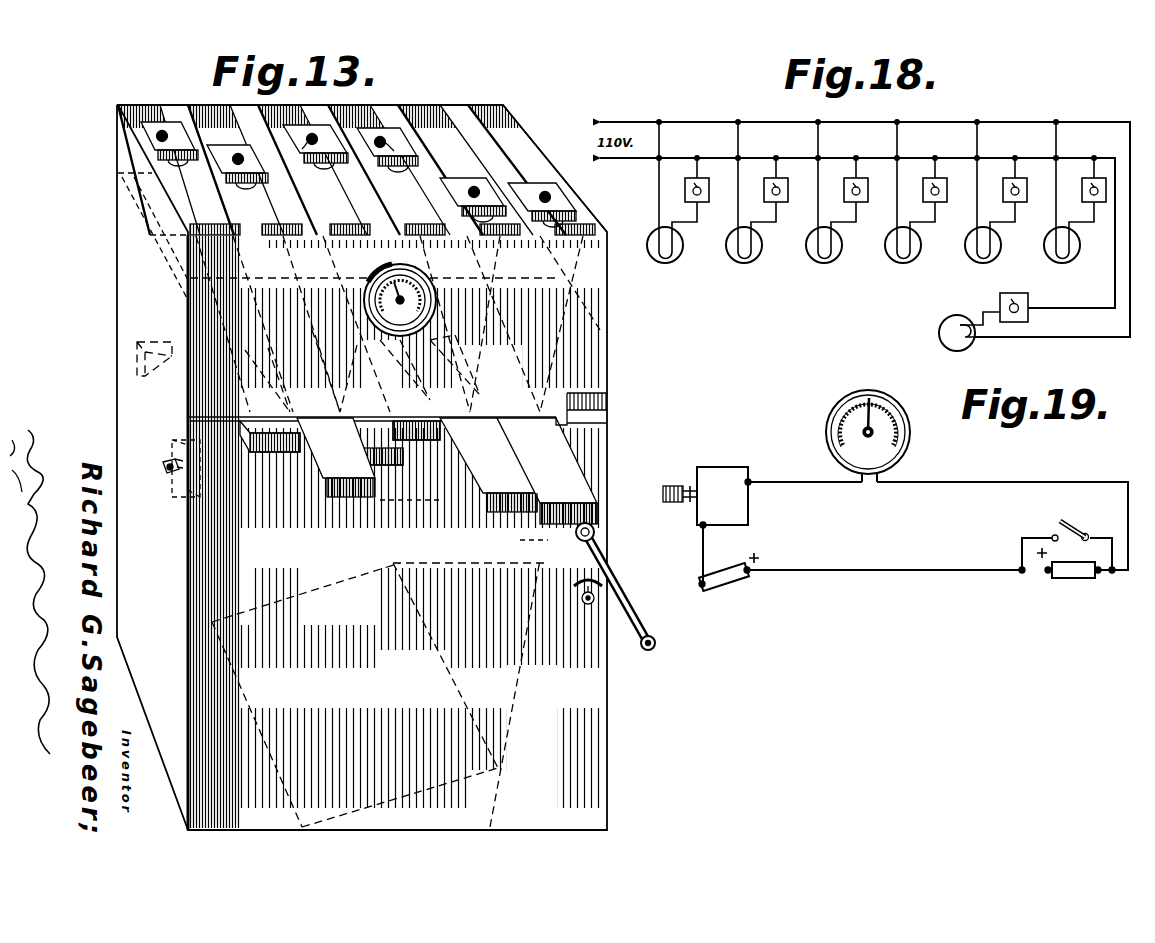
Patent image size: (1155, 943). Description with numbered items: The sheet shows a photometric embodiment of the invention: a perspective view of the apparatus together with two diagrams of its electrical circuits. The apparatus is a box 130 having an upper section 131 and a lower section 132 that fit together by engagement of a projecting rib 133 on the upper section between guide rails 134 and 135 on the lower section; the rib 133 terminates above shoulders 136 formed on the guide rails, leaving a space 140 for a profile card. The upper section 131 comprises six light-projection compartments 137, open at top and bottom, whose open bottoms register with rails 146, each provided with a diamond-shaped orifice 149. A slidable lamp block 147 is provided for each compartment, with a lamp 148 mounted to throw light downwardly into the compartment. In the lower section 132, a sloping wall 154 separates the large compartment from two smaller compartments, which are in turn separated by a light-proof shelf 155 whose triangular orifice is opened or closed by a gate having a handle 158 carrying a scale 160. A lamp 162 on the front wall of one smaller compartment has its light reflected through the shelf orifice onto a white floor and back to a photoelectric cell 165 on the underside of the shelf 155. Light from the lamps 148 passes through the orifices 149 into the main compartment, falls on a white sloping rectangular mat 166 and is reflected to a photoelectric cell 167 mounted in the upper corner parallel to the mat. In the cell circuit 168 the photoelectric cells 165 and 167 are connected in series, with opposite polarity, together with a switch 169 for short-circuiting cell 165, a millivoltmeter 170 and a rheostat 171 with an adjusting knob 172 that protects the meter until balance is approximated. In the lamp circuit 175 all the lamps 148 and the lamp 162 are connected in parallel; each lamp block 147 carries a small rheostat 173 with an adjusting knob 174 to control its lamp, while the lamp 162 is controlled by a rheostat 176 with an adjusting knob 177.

In FIG. 13, the box 130 is at (640, 767).
In FIG. 13, the upper section 131 is at (591, 322).
In FIG. 13, the lower section 132 is at (592, 732).
In FIG. 13, the projecting rib 133 is at (560, 397).
In FIG. 13, the guide rail 134 is at (576, 411).
In FIG. 13, the guide rail 135 is at (222, 406).
In FIG. 13, the shoulders 136 is at (566, 425).
In FIG. 13, the light-projection compartments 137 is at (202, 112).
In FIG. 13, the space 140 is at (303, 457).
In FIG. 13, the rails 146 is at (545, 520).
In FIG. 13, the slidable lamp block 147 is at (143, 133).
In FIG. 13, the lamp 148 is at (160, 172).
In FIG. 18, the lamp 148 is at (742, 254).
In FIG. 13, the diamond-shaped orifice 149 is at (195, 320).
In FIG. 13, the sloping wall 154 is at (425, 516).
In FIG. 13, the light-proof shelf 155 is at (548, 560).
In FIG. 13, the handle 158 is at (660, 644).
In FIG. 13, the scale 160 is at (612, 580).
In FIG. 18, the lamp 162 is at (954, 321).
In FIG. 19, the photoelectric cell 165 is at (1072, 580).
In FIG. 13, the sloping rectangular mat 166 is at (360, 576).
In FIG. 19, the photoelectric cell 167 is at (720, 586).
In FIG. 19, the circuit 168 is at (814, 490).
In FIG. 19, the switch 169 is at (1079, 509).
In FIG. 13, the millivoltmeter 170 is at (412, 272).
In FIG. 19, the millivoltmeter 170 is at (840, 408).
In FIG. 13, the rheostat 171 is at (176, 482).
In FIG. 19, the rheostat 171 is at (736, 466).
In FIG. 13, the adjusting knob 172 is at (164, 464).
In FIG. 19, the adjusting knob 172 is at (667, 483).
In FIG. 18, the rheostat 173 is at (708, 178).
In FIG. 13, the adjusting knob 174 is at (378, 138).
In FIG. 18, the adjusting knob 174 is at (709, 204).
In FIG. 18, the circuit 175 is at (672, 161).
In FIG. 18, the rheostat 176 is at (1010, 293).
In FIG. 13, the adjusting knob 177 is at (590, 602).
In FIG. 18, the adjusting knob 177 is at (1028, 307).